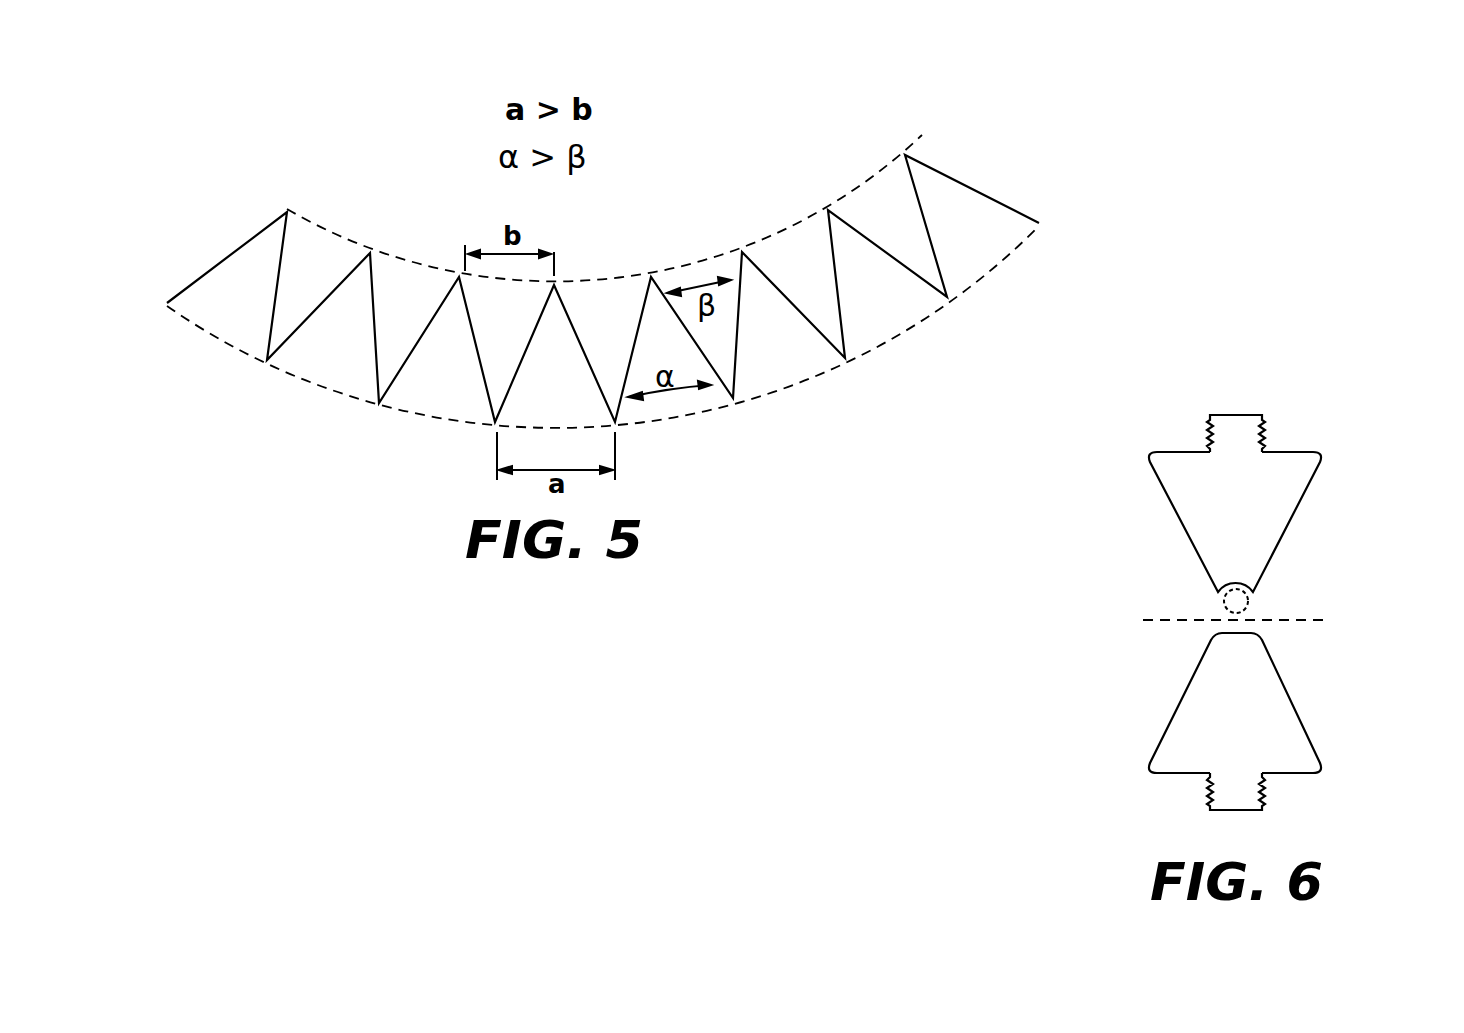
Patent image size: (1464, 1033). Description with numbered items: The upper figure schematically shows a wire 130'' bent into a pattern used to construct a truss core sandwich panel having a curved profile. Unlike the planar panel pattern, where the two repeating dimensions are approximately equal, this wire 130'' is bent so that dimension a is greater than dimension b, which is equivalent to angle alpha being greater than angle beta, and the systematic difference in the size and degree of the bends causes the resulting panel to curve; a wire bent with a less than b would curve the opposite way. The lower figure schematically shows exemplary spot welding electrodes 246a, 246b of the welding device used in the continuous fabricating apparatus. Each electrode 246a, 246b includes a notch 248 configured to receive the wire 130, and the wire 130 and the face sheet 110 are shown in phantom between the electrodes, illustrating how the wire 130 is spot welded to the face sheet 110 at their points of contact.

In FIG. 5, the wire 130'' is at (606, 238).
In FIG. 6, the spot welding electrode 246a is at (1287, 498).
In FIG. 6, the spot welding electrode 246b is at (1288, 717).
In FIG. 6, the notch 248 is at (1236, 586).
In FIG. 6, the wire 130 is at (1334, 581).
In FIG. 6, the face sheet 110 is at (1307, 622).